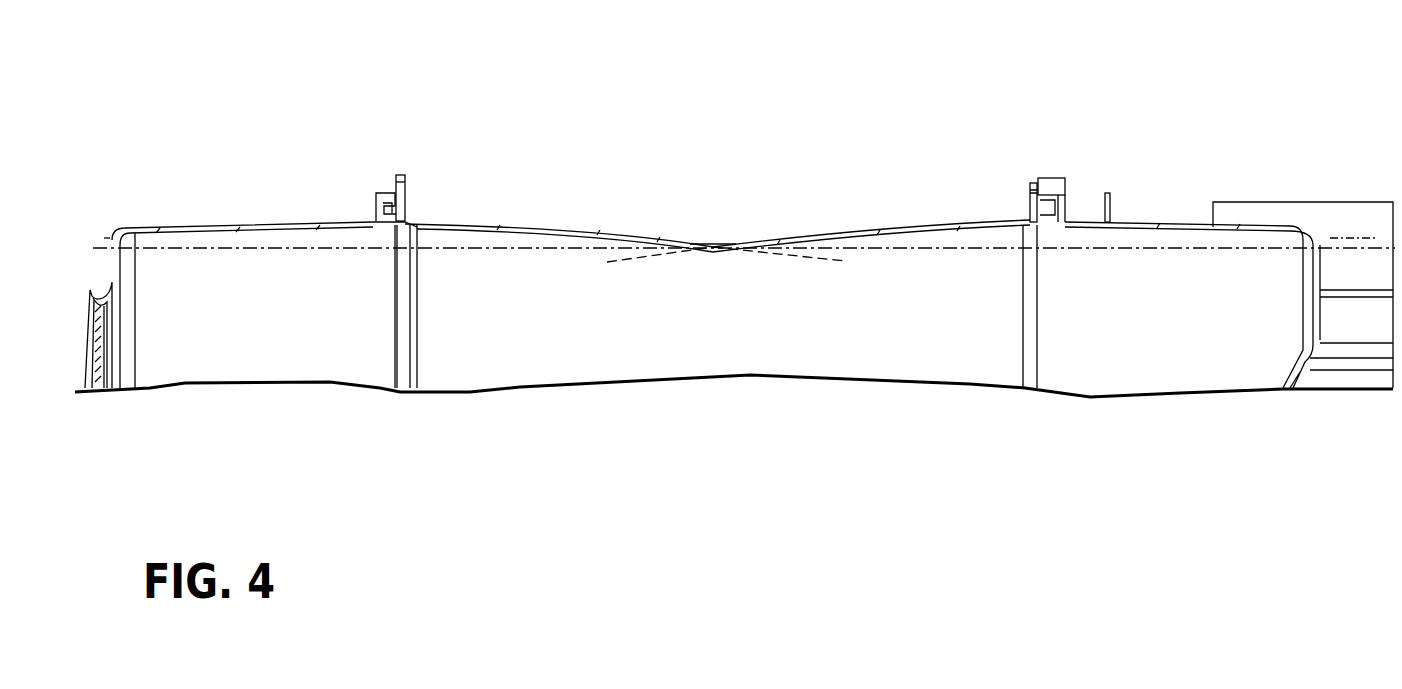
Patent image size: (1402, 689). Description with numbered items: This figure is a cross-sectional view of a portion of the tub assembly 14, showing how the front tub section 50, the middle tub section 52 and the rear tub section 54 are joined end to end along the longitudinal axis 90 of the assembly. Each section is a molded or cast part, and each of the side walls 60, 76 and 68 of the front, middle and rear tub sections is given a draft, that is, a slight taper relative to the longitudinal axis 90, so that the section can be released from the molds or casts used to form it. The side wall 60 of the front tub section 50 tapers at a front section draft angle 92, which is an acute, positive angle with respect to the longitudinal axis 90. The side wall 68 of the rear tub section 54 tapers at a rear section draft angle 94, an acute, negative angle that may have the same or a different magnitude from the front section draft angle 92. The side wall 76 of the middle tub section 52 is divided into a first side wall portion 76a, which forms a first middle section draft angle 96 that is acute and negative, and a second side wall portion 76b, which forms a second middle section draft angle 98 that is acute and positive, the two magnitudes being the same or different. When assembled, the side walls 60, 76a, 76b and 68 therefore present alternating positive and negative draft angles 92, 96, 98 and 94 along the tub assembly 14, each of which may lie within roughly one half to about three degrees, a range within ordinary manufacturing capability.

The tub assembly 14 is at (1040, 82).
The front tub section 50 is at (225, 210).
The middle tub section 52 is at (665, 230).
The rear tub section 54 is at (1088, 200).
The side wall 60 is at (281, 222).
The side wall 68 is at (1150, 225).
The side wall 76 is at (717, 179).
The first side wall portion 76a is at (503, 223).
The second side wall portion 76b is at (897, 225).
The longitudinal axis 90 is at (1387, 247).
The front section draft angle 92 is at (95, 238).
The rear section draft angle 94 is at (1335, 247).
The first middle section draft angle 96 is at (818, 253).
The second middle section draft angle 98 is at (630, 253).